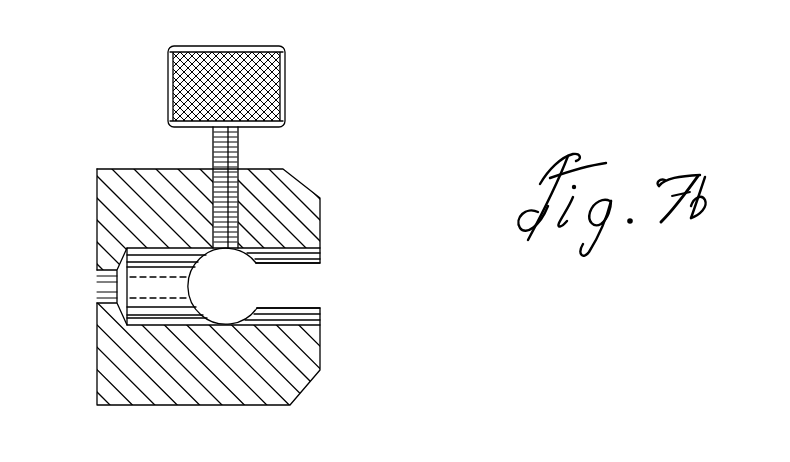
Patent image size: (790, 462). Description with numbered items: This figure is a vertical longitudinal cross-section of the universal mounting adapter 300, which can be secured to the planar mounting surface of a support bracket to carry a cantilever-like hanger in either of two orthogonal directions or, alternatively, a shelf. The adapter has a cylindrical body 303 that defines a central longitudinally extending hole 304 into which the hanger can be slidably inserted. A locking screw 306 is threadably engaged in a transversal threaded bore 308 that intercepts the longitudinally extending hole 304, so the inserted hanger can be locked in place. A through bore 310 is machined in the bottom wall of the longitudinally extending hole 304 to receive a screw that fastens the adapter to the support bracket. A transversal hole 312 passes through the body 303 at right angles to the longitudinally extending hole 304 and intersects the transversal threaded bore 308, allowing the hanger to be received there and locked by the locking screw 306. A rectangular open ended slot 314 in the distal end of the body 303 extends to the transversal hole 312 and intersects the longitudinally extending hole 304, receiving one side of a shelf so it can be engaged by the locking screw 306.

The universal mounting adapter 300 is at (347, 194).
The cylindrical body 303 is at (122, 192).
The central longitudinally extending hole 304 is at (172, 293).
The locking screw 306 is at (240, 60).
The transversal threaded bore 308 is at (240, 168).
The through bore 310 is at (103, 287).
The transversal hole 312 is at (198, 313).
The rectangular open ended slot 314 is at (307, 283).